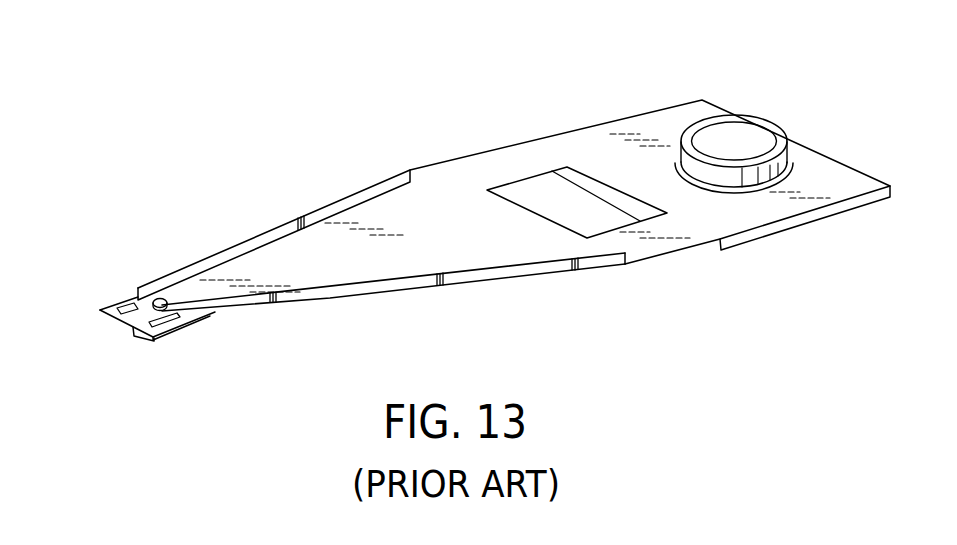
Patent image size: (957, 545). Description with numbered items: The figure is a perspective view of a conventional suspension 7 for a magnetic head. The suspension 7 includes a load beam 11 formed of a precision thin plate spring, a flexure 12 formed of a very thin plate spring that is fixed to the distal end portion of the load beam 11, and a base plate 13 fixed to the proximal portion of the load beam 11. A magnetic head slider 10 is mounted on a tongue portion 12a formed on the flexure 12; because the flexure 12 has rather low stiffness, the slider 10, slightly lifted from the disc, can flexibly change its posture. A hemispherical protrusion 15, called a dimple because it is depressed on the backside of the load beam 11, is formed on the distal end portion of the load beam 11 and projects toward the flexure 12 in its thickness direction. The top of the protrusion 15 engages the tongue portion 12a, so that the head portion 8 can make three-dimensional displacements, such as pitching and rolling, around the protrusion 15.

The suspension 7 is at (607, 121).
The head portion 8 is at (127, 343).
The magnetic head slider 10 is at (160, 341).
The load beam 11 is at (444, 189).
The flexure 12 is at (212, 315).
The tongue portion 12a is at (131, 302).
The base plate 13 is at (773, 238).
The hemispherical protrusion 15 is at (160, 296).